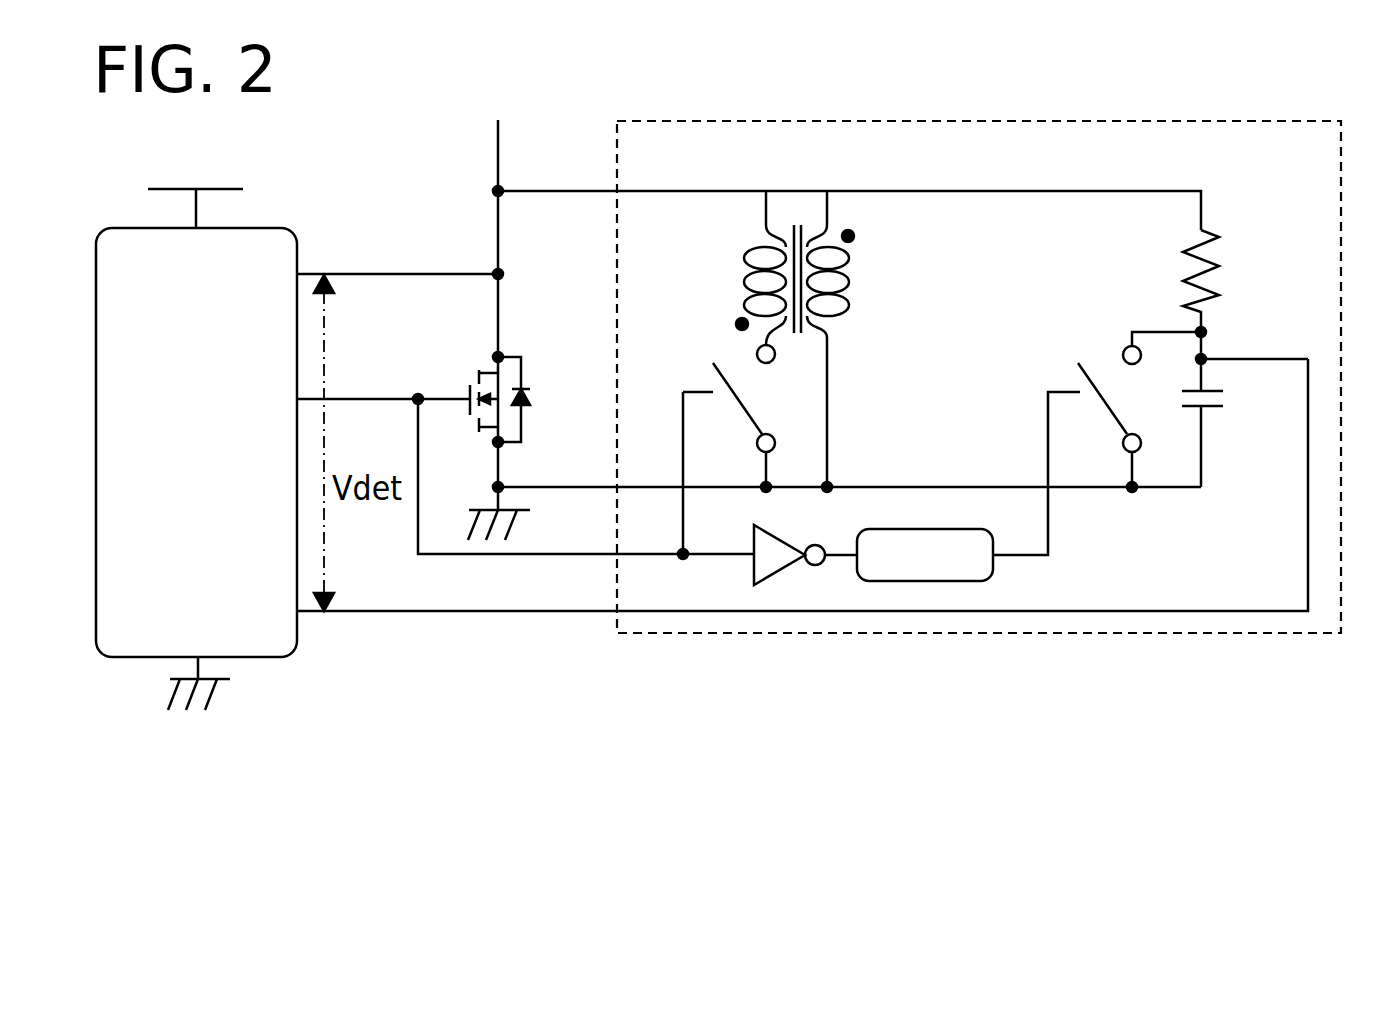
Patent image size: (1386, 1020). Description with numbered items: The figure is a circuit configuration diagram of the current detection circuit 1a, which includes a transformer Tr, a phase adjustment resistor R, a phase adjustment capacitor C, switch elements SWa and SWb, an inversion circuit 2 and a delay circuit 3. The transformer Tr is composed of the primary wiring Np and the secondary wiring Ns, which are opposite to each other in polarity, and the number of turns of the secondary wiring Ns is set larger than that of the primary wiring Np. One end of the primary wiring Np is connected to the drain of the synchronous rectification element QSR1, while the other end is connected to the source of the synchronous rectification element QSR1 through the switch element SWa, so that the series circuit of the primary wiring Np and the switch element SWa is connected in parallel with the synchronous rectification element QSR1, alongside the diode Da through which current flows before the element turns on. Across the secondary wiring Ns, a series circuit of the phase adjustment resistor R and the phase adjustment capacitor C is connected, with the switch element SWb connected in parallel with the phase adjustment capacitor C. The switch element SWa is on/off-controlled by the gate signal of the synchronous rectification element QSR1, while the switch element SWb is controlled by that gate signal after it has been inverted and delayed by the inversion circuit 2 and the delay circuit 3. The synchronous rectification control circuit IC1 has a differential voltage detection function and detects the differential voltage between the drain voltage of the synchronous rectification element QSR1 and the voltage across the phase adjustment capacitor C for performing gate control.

The current detection circuit 1a is at (1102, 121).
The inversion circuit 2 is at (777, 535).
The delay circuit 3 is at (993, 574).
The synchronous rectification control circuit IC1 is at (254, 228).
The synchronous rectification element QSR1 is at (462, 380).
The diode Da is at (535, 399).
The transformer Tr is at (791, 319).
The primary wiring Np is at (702, 281).
The secondary wiring Ns is at (882, 281).
The switch element SWa is at (708, 442).
The switch element SWb is at (1104, 411).
The phase adjustment resistor R is at (1219, 310).
The phase adjustment capacitor C is at (1245, 423).